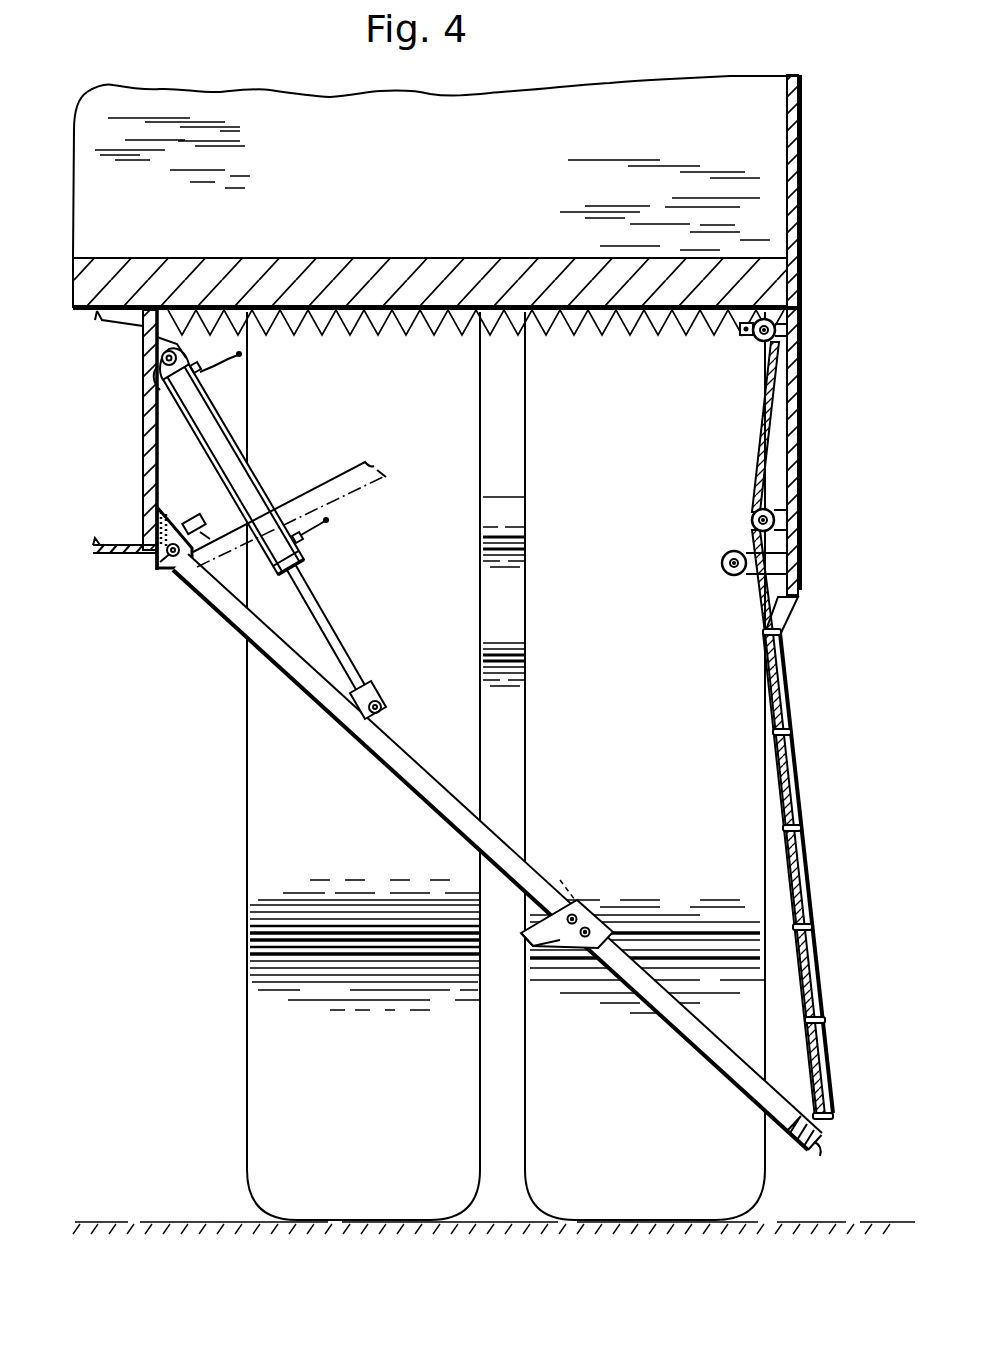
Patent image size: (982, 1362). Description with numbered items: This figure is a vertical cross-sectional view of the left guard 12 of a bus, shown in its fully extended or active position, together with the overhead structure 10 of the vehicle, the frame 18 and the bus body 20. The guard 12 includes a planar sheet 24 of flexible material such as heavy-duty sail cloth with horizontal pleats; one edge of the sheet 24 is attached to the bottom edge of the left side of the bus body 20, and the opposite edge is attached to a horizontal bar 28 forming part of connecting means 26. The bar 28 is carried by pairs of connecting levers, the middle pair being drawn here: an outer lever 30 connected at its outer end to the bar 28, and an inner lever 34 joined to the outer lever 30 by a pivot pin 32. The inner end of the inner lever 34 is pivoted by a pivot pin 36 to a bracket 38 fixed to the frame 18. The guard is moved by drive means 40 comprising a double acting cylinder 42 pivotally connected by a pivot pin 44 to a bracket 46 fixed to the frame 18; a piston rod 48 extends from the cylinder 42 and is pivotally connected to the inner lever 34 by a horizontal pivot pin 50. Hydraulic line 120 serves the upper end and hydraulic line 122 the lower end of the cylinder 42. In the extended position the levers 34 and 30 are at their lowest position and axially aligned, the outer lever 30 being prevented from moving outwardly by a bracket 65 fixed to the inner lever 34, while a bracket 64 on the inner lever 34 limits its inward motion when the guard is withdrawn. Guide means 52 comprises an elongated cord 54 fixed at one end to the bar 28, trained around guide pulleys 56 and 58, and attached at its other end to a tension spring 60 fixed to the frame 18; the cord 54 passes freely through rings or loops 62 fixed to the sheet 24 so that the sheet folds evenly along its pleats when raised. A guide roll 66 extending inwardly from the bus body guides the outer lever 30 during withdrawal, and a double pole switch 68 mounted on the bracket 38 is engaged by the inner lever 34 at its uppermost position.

The ship deck / overhead structure 10 is at (211, 80).
The left guard 12 is at (817, 738).
The frame 18 is at (143, 495).
The bus body 20 is at (803, 280).
The sheet of flexible material 24 is at (799, 774).
The connecting means 26 is at (598, 1006).
The horizontal bar 28 is at (818, 1150).
The outer lever 30 is at (667, 1012).
The pivot pin 32 is at (605, 934).
The inner lever 34 is at (438, 808).
The pivot pin 36 is at (170, 575).
The bracket 38 is at (155, 565).
The drive means 40 is at (343, 456).
The double acting cylinder 42 is at (250, 474).
The pivot pin 44 is at (183, 398).
The bracket 46 is at (163, 390).
The piston rod 48 is at (319, 608).
The pivot pin 50 is at (383, 694).
The guide means 52 is at (733, 354).
The cord 54 is at (757, 423).
The guide pulley 56 is at (777, 334).
The guide pulley 58 is at (771, 509).
The tension spring 60 is at (570, 343).
The rings or loops 62 is at (762, 633).
The bracket 64 is at (543, 942).
The bracket 65 is at (584, 915).
The guide roll 66 is at (721, 563).
The double pole switch 68 is at (196, 515).
The hydraulic line 120 is at (212, 380).
The hydraulic line 122 is at (318, 530).